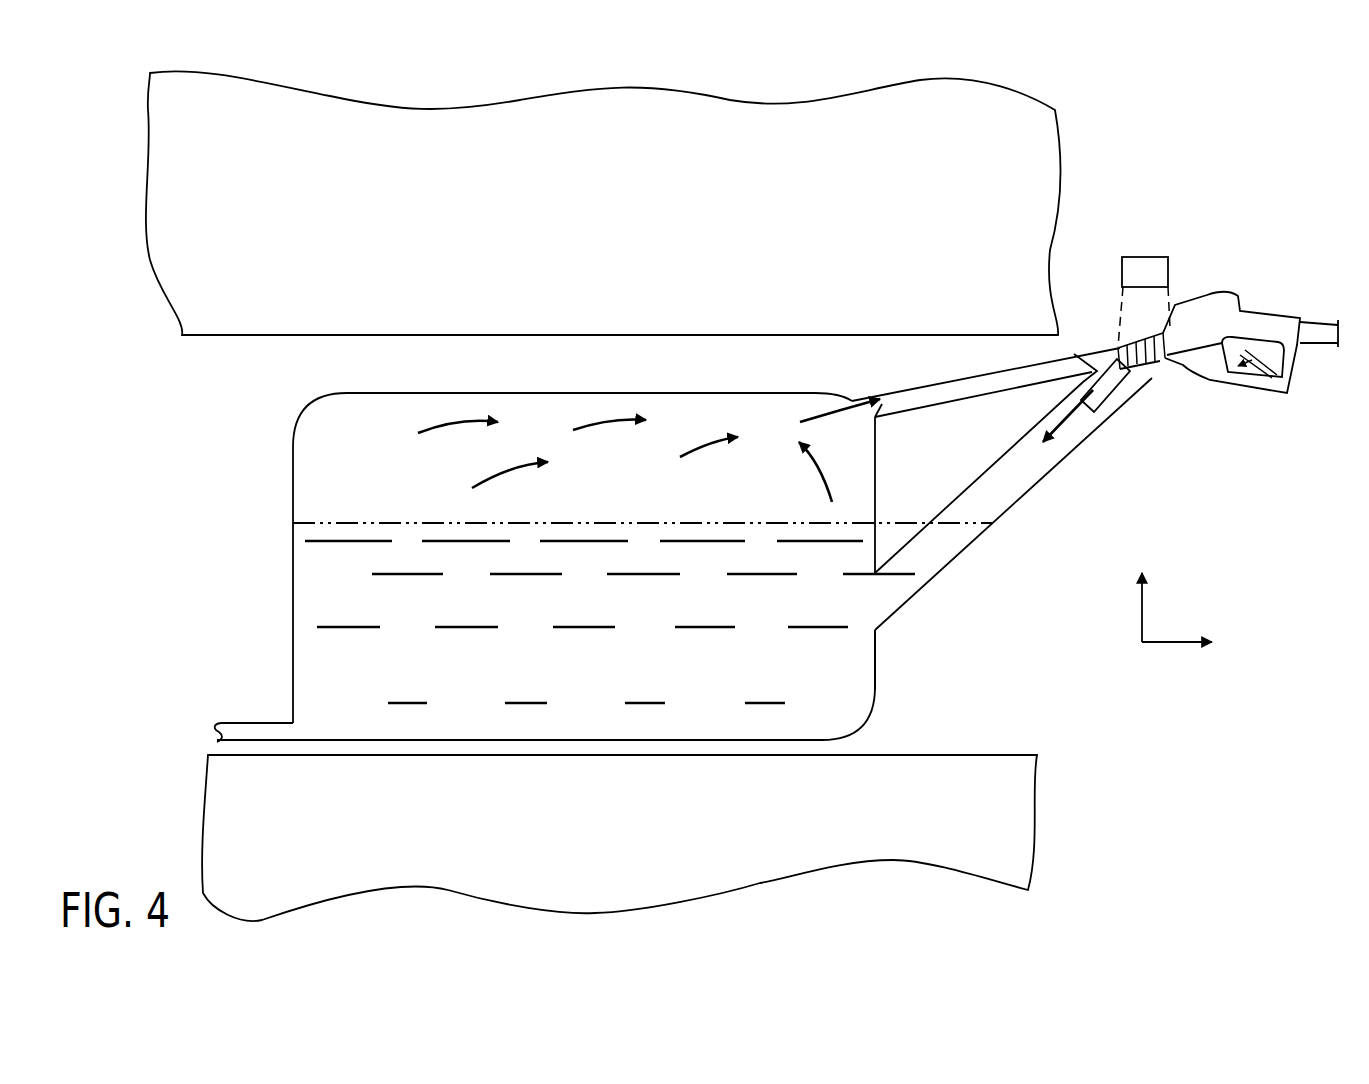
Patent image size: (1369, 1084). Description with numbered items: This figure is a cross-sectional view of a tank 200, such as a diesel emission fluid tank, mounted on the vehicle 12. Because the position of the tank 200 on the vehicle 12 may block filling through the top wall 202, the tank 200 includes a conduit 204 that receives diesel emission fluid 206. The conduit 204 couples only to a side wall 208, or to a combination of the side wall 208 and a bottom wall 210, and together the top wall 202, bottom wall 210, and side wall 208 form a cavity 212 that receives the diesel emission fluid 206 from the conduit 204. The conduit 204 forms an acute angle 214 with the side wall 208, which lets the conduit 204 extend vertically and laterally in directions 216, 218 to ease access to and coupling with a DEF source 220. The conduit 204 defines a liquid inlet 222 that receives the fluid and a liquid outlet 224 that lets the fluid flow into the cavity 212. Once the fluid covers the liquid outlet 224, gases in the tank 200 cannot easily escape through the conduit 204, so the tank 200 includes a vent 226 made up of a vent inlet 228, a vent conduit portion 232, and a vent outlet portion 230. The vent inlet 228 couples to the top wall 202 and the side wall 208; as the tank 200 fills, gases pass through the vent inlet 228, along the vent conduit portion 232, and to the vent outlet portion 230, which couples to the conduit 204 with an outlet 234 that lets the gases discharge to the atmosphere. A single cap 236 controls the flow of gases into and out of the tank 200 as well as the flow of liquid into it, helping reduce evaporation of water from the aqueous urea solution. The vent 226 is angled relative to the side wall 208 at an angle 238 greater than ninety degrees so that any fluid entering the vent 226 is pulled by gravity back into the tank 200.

The vehicle 12 is at (540, 197).
The tank 200 is at (1058, 595).
The top wall 202 is at (500, 393).
The conduit 204 is at (1052, 473).
The diesel emission fluid 206 is at (458, 674).
The side wall 208 is at (877, 657).
The bottom wall 210 is at (517, 741).
The cavity 212 is at (459, 477).
The acute angle 214 is at (877, 514).
The vertical direction 216 is at (1142, 612).
The lateral direction 218 is at (1172, 645).
The DEF source 220 is at (1228, 305).
The liquid inlet 222 is at (1147, 378).
The liquid outlet 224 is at (878, 611).
The vent 226 is at (881, 382).
The vent inlet 228 is at (872, 418).
The vent outlet portion 230 is at (1101, 341).
The vent conduit portion 232 is at (957, 400).
The outlet 234 is at (1118, 349).
The cap 236 is at (1145, 256).
The angle 238 is at (879, 419).